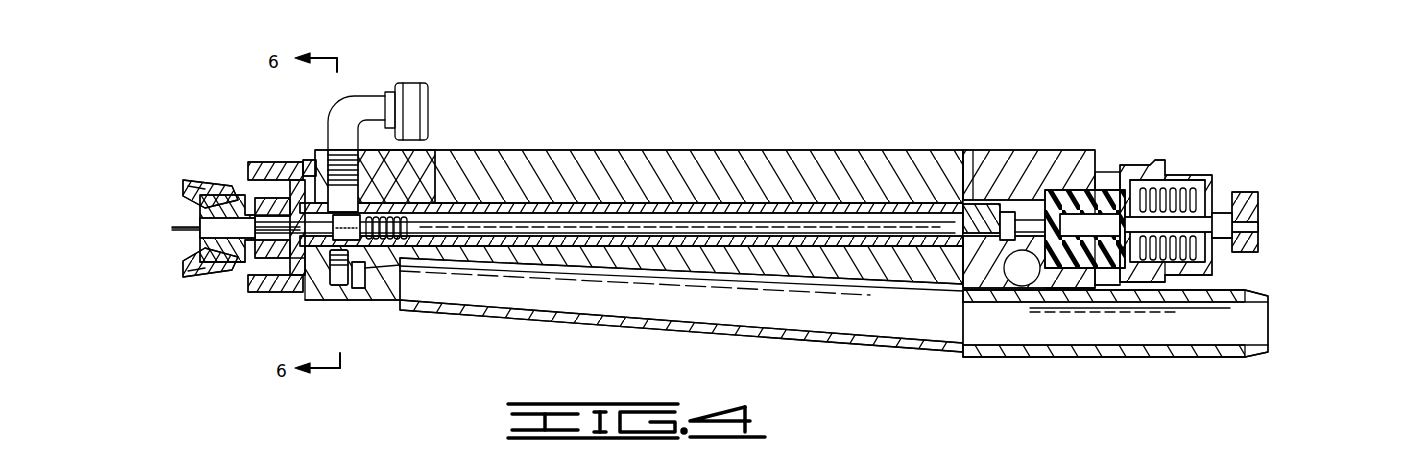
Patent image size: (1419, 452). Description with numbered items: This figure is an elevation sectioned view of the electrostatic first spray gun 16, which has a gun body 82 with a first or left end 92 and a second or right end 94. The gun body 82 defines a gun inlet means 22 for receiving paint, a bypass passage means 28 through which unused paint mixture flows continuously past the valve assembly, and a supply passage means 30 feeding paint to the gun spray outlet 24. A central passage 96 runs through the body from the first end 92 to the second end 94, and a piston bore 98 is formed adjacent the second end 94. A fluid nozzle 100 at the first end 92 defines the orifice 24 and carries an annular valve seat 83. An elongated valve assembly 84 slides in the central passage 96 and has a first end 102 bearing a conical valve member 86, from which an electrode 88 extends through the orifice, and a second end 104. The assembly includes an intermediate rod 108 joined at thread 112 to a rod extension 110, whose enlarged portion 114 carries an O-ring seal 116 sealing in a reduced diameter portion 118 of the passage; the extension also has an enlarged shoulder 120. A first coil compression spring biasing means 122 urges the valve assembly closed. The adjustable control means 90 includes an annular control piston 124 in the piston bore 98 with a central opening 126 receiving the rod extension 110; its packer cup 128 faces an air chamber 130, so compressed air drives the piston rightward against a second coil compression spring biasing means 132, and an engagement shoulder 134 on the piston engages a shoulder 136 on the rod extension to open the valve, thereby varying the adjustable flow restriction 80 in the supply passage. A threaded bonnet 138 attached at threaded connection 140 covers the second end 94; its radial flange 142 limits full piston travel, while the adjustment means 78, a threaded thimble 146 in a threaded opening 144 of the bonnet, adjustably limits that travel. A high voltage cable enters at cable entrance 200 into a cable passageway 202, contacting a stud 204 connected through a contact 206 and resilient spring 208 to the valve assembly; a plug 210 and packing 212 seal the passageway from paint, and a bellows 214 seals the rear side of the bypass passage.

The first spray gun 16 is at (798, 88).
The gun inlet means 22 is at (343, 172).
The gun spray outlet 24 is at (217, 230).
The bypass passage means 28 is at (378, 160).
The supply passage means 30 is at (280, 273).
The adjustment means 78 is at (1310, 220).
The adjustable flow restriction 80 is at (192, 193).
The gun body 82 is at (597, 150).
The annular valve seat 83 is at (225, 268).
The valve assembly 84 is at (403, 253).
The valve member 86 is at (219, 228).
The electrode 88 is at (203, 225).
The adjustable control means 90 is at (1245, 222).
The first end 92 is at (260, 172).
The second end 94 is at (1172, 290).
The central passage 96 is at (395, 208).
The piston bore 98 is at (1108, 300).
The fluid nozzle 100 is at (300, 165).
The first end 102 is at (233, 195).
The second end 104 is at (1245, 230).
The intermediate rod 108 is at (738, 152).
The rod extension 110 is at (1055, 205).
The thread 112 is at (1000, 152).
The enlarged portion 114 is at (1022, 200).
The O-ring seal 116 is at (963, 290).
The reduced diameter portion 118 is at (973, 345).
The enlarged shoulder 120 is at (1155, 185).
The first coil compression spring biasing means 122 is at (1210, 190).
The annular control piston 124 is at (1128, 300).
The central opening 126 is at (1040, 310).
The packer cup 128 is at (1112, 210).
The air chamber 130 is at (1097, 192).
The second coil compression spring biasing means 132 is at (1185, 290).
The engagement shoulder 134 is at (1075, 300).
The shoulder 136 is at (1128, 185).
The threaded bonnet 138 is at (1200, 180).
The threaded connection 140 is at (1150, 300).
The radial flange 142 is at (1180, 162).
The threaded opening 144 is at (1250, 238).
The threaded thimble 146 is at (1272, 204).
The cable entrance 200 is at (1272, 328).
The cable passageway 202 is at (545, 300).
The stud 204 is at (357, 285).
The contact 206 is at (315, 272).
The resilient spring 208 is at (295, 265).
The plug 210 is at (352, 275).
The packing 212 is at (340, 290).
The bellows 214 is at (415, 207).